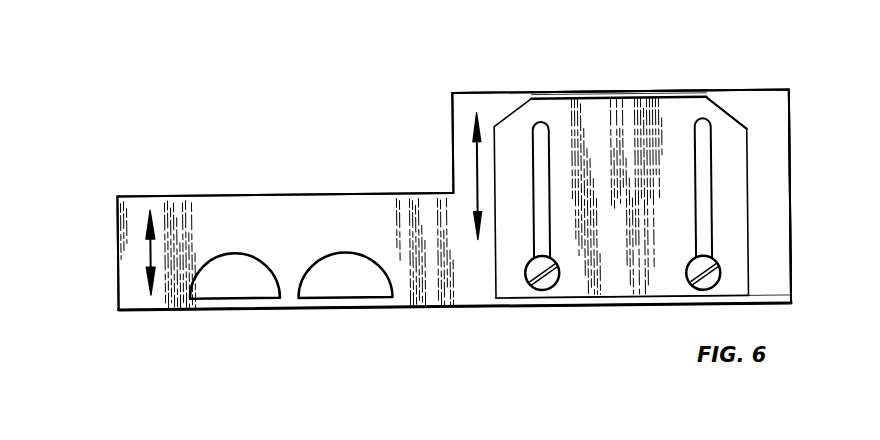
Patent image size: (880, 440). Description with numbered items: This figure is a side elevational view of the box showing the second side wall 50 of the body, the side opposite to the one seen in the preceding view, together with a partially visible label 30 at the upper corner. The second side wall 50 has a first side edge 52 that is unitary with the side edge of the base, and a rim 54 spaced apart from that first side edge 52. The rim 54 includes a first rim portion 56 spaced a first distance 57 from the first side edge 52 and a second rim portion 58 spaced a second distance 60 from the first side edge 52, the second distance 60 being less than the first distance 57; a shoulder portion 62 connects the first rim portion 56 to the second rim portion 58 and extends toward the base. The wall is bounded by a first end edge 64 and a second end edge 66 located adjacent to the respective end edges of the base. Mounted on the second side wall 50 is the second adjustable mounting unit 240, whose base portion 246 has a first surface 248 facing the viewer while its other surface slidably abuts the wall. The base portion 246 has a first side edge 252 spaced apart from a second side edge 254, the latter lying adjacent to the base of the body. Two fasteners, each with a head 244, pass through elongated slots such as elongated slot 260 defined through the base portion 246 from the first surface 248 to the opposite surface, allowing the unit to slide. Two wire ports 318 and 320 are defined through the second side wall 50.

The apparatus 30 is at (62, 7).
The second side wall 50 is at (460, 290).
The first side edge 52 is at (493, 305).
The rim 54 is at (510, 97).
The first rim portion 56 is at (587, 96).
The first distance 57 is at (477, 160).
The second rim portion 58 is at (165, 197).
The second distance 60 is at (150, 250).
The shoulder portion 62 is at (453, 125).
The first end edge 64 is at (792, 113).
The second end edge 66 is at (118, 207).
The second adjustable mounting unit 240 is at (629, 103).
The head 244 is at (687, 268).
The base portion 246 is at (590, 300).
The first surface 248 is at (673, 115).
The first side edge 252 is at (732, 117).
The second side edge 254 is at (672, 303).
The elongated slot 260 is at (693, 221).
The wire port 318 is at (256, 282).
The wire port 320 is at (366, 285).